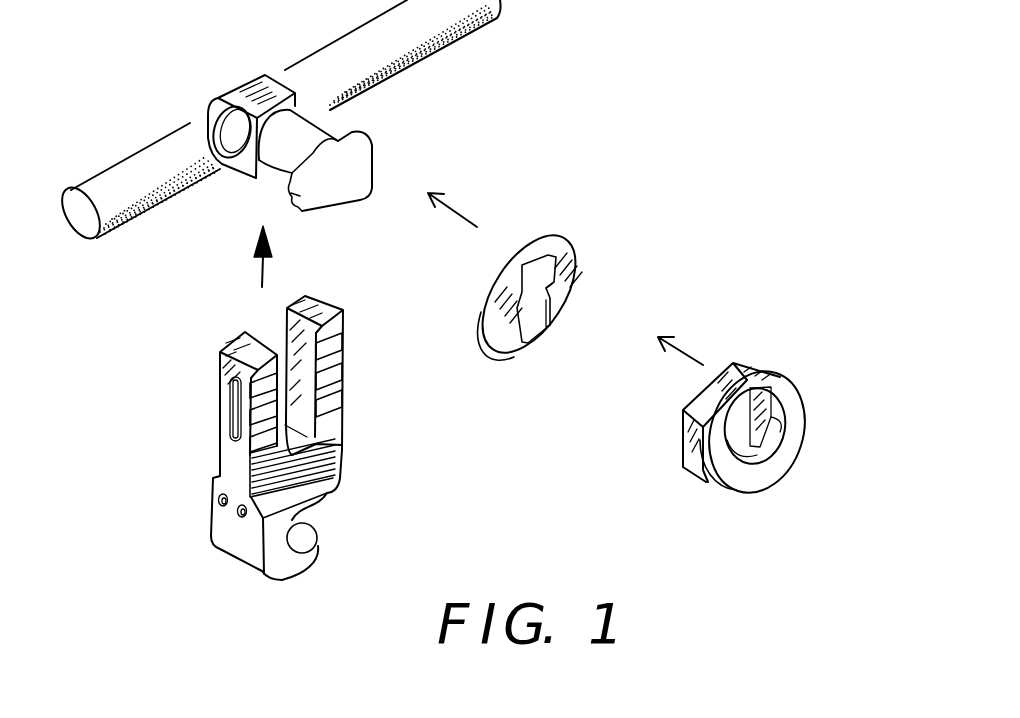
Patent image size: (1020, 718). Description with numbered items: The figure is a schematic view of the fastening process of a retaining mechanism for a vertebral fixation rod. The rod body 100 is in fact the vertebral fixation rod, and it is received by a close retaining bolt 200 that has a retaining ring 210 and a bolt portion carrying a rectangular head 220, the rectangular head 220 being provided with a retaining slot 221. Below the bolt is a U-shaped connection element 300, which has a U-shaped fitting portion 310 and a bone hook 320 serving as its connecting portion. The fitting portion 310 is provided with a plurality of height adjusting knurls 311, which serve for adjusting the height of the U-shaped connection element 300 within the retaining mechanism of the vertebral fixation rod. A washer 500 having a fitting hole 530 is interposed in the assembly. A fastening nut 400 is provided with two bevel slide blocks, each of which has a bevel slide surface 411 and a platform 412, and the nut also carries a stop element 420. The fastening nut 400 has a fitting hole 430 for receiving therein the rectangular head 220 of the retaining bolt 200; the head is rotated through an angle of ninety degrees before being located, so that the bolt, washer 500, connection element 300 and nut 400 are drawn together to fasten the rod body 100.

The rod body 100 is at (417, 62).
The close retaining bolt 200 is at (395, 149).
The retaining ring 210 is at (260, 102).
The rectangular head 220 is at (377, 166).
The retaining slot 221 is at (298, 200).
The U-shaped connection element 300 is at (355, 438).
The U-shaped fitting portion 310 is at (325, 386).
The height adjusting knurls 311 is at (328, 375).
The bone hook 320 is at (270, 547).
The fastening nut 400 is at (813, 432).
The bevel slide surface 411 is at (778, 426).
The platform 412 is at (773, 400).
The stop element 420 is at (722, 477).
The fitting hole 430 is at (735, 438).
The washer 500 is at (565, 294).
The fitting hole 530 is at (527, 300).